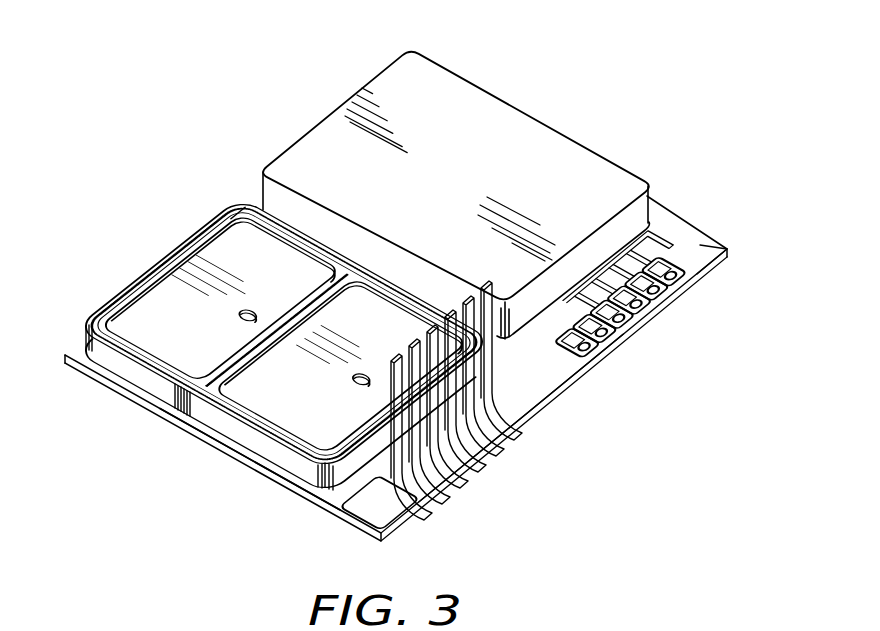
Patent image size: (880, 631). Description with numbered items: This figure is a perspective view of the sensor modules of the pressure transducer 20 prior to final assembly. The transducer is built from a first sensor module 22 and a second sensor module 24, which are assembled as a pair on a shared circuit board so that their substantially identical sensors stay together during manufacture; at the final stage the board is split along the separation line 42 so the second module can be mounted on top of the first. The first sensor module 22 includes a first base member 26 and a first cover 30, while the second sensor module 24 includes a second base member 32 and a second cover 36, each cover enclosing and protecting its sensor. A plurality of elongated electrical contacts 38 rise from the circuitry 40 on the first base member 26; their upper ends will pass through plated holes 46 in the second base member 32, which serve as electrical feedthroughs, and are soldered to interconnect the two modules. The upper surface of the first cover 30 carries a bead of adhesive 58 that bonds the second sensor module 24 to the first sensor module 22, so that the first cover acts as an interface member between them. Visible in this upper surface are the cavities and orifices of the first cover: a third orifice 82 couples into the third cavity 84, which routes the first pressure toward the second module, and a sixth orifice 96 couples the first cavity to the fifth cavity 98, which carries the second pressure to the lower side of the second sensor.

The pressure transducer 20 is at (135, 485).
The first sensor module 22 is at (127, 409).
The second sensor module 24 is at (456, 171).
The first base member 26 is at (254, 362).
The first cover 30 is at (84, 326).
The second base member 32 is at (664, 235).
The second cover 36 is at (427, 50).
The electrical contacts 38 is at (487, 286).
The circuitry 40 is at (364, 522).
The separation line 42 is at (520, 362).
The plated holes 46 is at (658, 290).
The bead of adhesive 58 is at (243, 352).
The third orifice 82 is at (362, 375).
The third cavity 84 is at (273, 393).
The sixth orifice 96 is at (249, 310).
The fifth cavity 98 is at (206, 350).